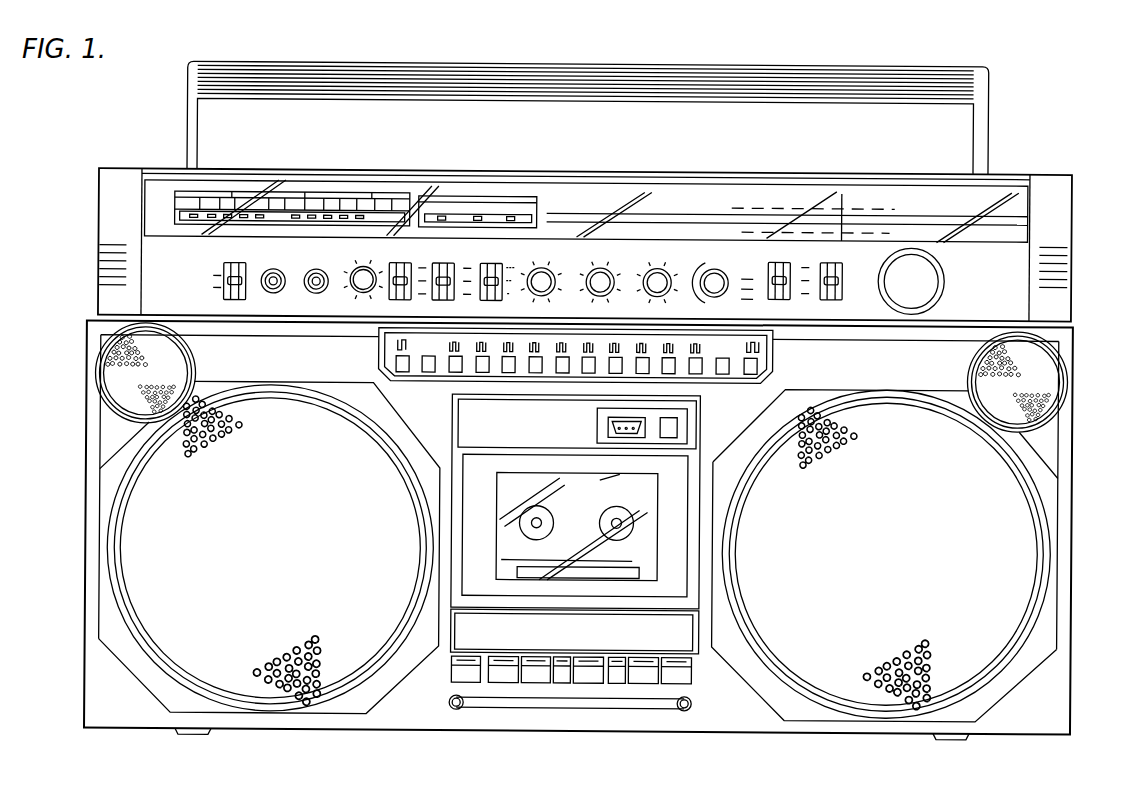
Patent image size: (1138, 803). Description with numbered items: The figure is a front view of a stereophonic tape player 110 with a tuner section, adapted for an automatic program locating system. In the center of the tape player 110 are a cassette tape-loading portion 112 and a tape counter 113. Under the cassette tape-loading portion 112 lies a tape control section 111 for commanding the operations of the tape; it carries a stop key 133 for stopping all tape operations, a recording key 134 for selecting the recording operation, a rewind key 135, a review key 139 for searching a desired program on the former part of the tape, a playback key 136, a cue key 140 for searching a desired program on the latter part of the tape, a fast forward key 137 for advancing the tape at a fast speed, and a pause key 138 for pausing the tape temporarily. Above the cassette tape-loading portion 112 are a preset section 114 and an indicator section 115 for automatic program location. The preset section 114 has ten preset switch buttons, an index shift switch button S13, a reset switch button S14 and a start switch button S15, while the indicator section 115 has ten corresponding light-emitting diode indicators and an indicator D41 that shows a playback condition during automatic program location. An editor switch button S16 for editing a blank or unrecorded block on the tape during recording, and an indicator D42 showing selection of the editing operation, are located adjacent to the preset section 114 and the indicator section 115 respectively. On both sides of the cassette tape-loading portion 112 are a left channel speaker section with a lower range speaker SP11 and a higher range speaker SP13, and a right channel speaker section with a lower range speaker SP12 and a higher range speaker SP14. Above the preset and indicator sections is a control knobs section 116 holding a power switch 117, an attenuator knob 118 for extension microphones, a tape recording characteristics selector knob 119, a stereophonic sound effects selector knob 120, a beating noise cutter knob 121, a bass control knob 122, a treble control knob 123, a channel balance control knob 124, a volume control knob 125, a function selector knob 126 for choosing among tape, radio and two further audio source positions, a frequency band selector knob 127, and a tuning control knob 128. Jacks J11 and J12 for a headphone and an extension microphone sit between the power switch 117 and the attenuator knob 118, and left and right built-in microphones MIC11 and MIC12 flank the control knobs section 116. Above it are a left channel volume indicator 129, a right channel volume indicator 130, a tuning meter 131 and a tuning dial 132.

The tape player 110 is at (148, 718).
The tape control section 111 is at (472, 696).
The cassette tape-loading portion 112 is at (493, 462).
The tape counter 113 is at (606, 425).
The preset section 114 is at (377, 365).
The indicator section 115 is at (772, 345).
The control knobs section 116 is at (1012, 264).
The power switch 117 is at (220, 278).
The attenuator knob 118 is at (353, 270).
The tape recording characteristics selector knob 119 is at (399, 264).
The stereophonic sound effects selector knob 120 is at (444, 264).
The beating noise cutter knob 121 is at (492, 264).
The bass control knob 122 is at (546, 268).
The treble control knob 123 is at (605, 268).
The channel balance control knob 124 is at (661, 268).
The volume control knob 125 is at (718, 268).
The function selector knob 126 is at (780, 261).
The frequency band selector knob 127 is at (838, 274).
The tuning control knob 128 is at (943, 296).
The left channel volume indicator 129 is at (254, 195).
The right channel volume indicator 130 is at (385, 200).
The tuning meter 131 is at (482, 200).
The tuning dial 132 is at (676, 209).
The stop key 133 is at (462, 680).
The recording key 134 is at (505, 675).
The rewind key 135 is at (537, 676).
The playback key 136 is at (588, 678).
The fast forward key 137 is at (648, 678).
The pause key 138 is at (684, 678).
The review key 139 is at (564, 678).
The cue key 140 is at (620, 678).
The lower range speaker SP11 is at (180, 658).
The lower range speaker SP12 is at (1030, 570).
The higher range speaker SP13 is at (165, 364).
The higher range speaker SP14 is at (1043, 376).
The built-in microphone MIC11 is at (90, 252).
The built-in microphone MIC12 is at (1067, 278).
The jack J11 is at (268, 292).
The jack J12 is at (311, 292).
The indicator D41 is at (396, 347).
The indicator D42 is at (760, 348).
The index shift switch button S13 is at (721, 357).
The reset switch button S14 is at (430, 374).
The start switch button S15 is at (398, 374).
The editor switch button S16 is at (753, 375).